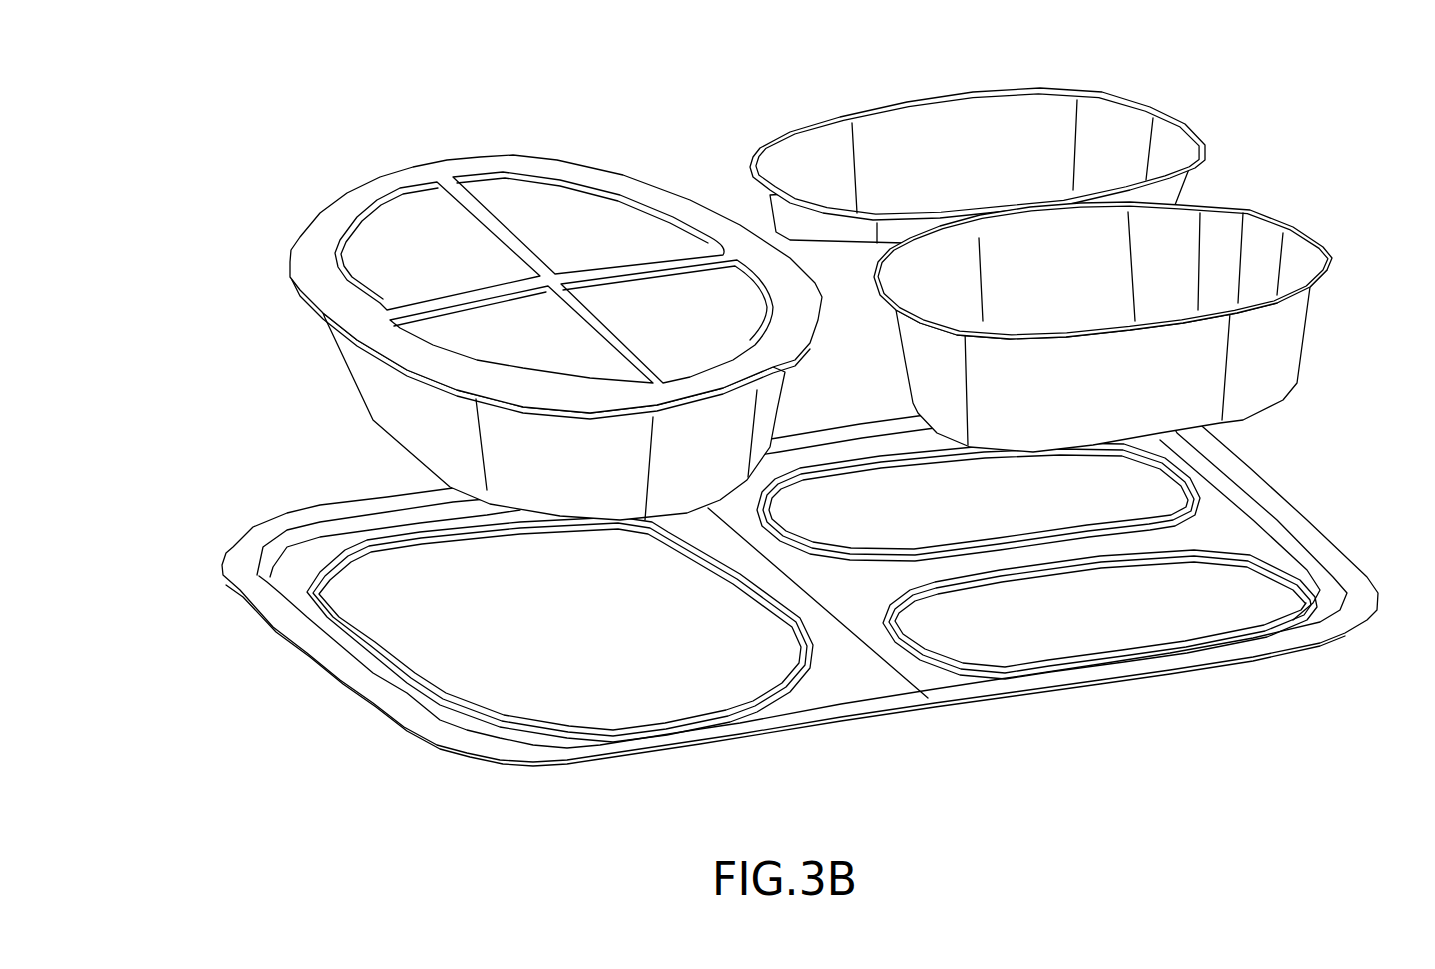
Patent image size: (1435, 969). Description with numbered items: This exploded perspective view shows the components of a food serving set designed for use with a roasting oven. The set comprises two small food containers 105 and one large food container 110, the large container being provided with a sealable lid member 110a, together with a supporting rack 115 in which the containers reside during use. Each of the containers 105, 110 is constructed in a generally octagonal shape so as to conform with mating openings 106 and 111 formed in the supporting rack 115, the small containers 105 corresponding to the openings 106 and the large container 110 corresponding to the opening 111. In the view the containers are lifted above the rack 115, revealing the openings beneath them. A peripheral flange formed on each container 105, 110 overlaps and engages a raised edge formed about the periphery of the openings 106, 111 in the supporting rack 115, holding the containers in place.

The small food container 105 is at (878, 138).
The mating opening 106 is at (1134, 627).
The large food container 110 is at (495, 325).
The sealable lid member 110a is at (397, 253).
The mating opening 111 is at (433, 663).
The supporting rack 115 is at (243, 570).